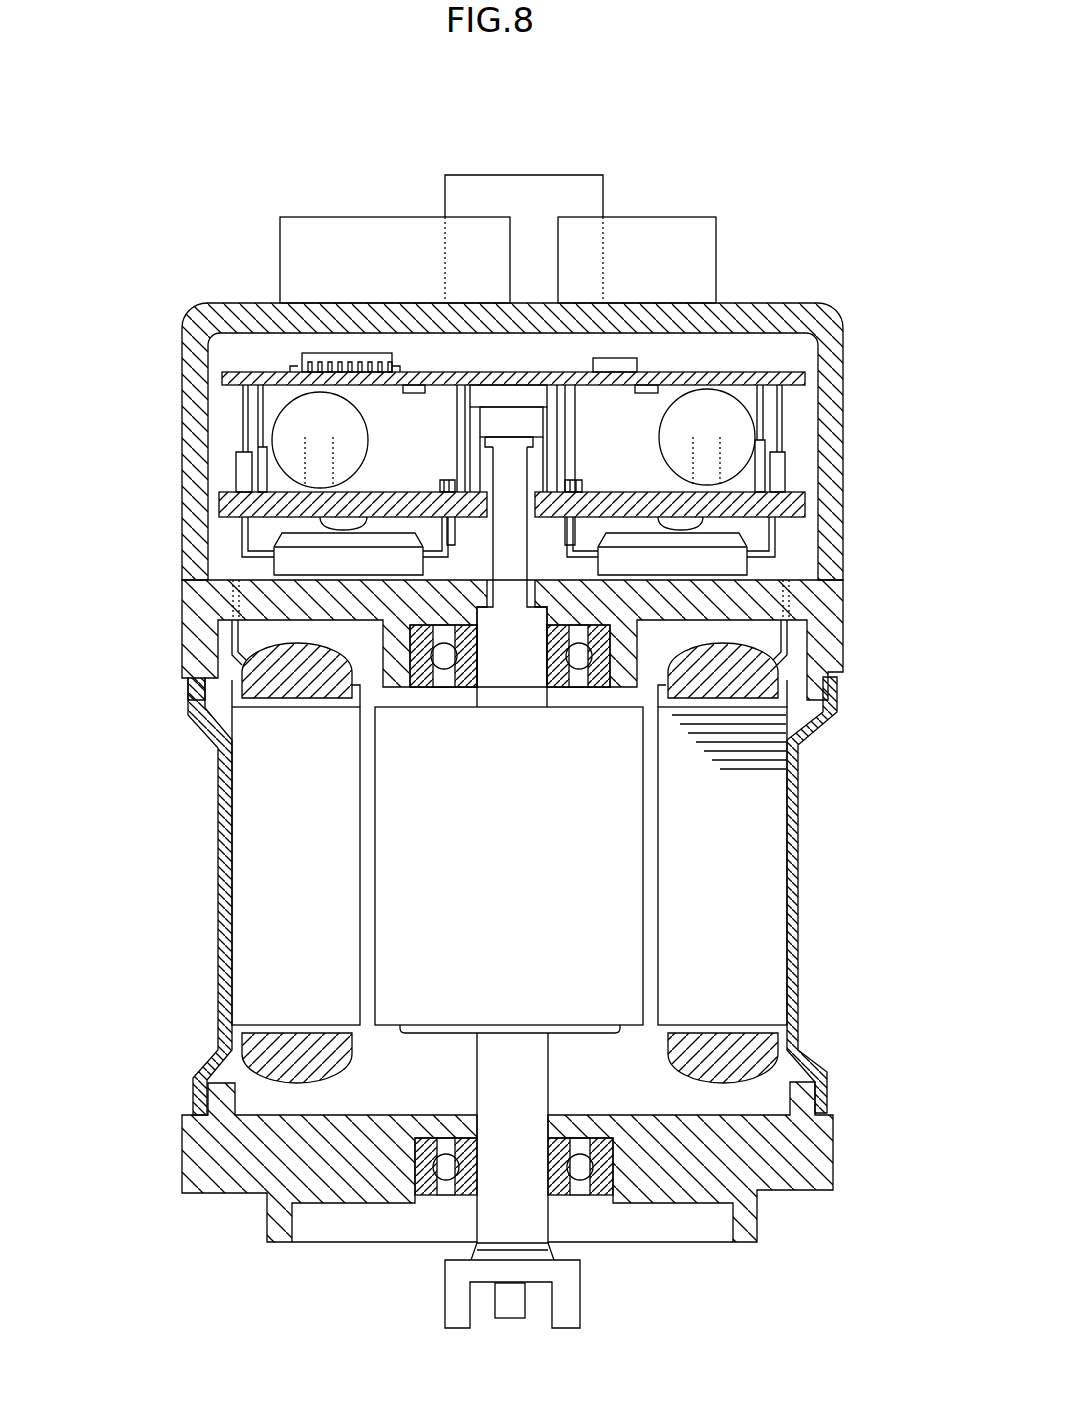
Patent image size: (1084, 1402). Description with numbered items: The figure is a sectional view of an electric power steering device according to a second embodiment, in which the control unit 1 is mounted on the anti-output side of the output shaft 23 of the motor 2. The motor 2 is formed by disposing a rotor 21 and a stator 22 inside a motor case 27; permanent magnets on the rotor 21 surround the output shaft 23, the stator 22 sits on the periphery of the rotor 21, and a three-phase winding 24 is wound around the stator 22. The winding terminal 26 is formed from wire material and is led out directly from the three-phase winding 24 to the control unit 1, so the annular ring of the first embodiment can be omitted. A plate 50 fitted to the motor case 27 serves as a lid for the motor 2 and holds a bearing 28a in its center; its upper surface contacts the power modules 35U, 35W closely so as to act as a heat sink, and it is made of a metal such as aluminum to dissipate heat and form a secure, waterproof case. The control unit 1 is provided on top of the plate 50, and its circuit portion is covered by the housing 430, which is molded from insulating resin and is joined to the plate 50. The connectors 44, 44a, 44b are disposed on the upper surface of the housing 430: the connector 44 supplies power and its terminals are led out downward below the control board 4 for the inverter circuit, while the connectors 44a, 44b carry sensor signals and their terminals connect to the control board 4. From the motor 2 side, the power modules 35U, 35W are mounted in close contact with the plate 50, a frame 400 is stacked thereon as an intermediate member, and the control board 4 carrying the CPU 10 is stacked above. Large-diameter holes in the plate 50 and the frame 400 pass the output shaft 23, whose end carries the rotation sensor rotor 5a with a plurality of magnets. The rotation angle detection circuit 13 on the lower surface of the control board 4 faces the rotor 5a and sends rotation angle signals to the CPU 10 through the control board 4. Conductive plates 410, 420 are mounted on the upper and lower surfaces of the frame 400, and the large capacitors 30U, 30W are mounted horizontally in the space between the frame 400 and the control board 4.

The control unit 1 is at (248, 300).
The motor 2 is at (800, 985).
The control board 4 is at (205, 336).
The rotation sensor rotor 5a is at (565, 385).
The CPU 10 is at (330, 352).
The rotation angle detection circuit 13 is at (548, 405).
The rotor 21 is at (625, 940).
The stator 22 is at (245, 945).
The output shaft 23 is at (542, 1082).
The three-phase winding 24 is at (808, 710).
The winding terminal 26 is at (232, 637).
The motor case 27 is at (192, 700).
The bearing 28a is at (617, 687).
The capacitor 30U is at (222, 496).
The capacitor 30W is at (765, 372).
The power module 35U is at (280, 562).
The power module 35W is at (745, 540).
The connector 44 is at (605, 203).
The connector 44a is at (385, 213).
The connector 44b is at (716, 245).
The plate 50 is at (188, 632).
The frame 400 is at (805, 500).
The conductive plate 410 is at (472, 470).
The conductive plate 420 is at (436, 480).
The housing 430 is at (215, 382).